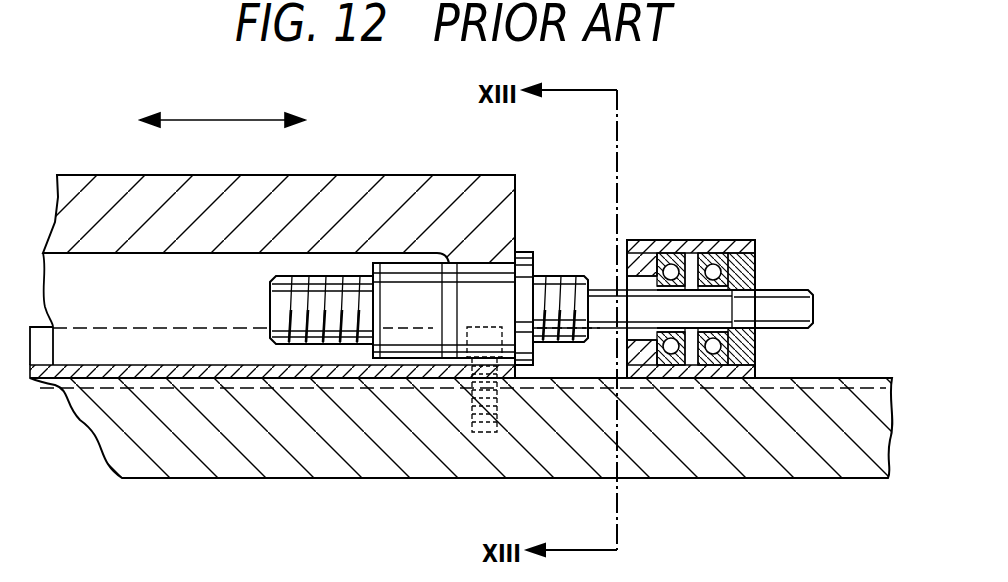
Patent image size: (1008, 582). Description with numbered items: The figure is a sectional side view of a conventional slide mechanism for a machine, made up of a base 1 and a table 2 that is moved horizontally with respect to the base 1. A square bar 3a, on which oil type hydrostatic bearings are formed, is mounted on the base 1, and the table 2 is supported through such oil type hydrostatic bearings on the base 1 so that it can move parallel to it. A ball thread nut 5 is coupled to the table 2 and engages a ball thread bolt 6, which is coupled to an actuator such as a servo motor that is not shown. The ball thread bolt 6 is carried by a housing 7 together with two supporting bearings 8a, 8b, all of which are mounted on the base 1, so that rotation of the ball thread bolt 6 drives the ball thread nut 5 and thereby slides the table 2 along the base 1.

The base 1 is at (257, 445).
The table 2 is at (345, 190).
The square bar 3a is at (560, 363).
The ball thread nut 5 is at (474, 292).
The ball thread bolt 6 is at (783, 305).
The housing 7 is at (639, 243).
The supporting bearing 8a is at (670, 258).
The supporting bearing 8b is at (708, 258).